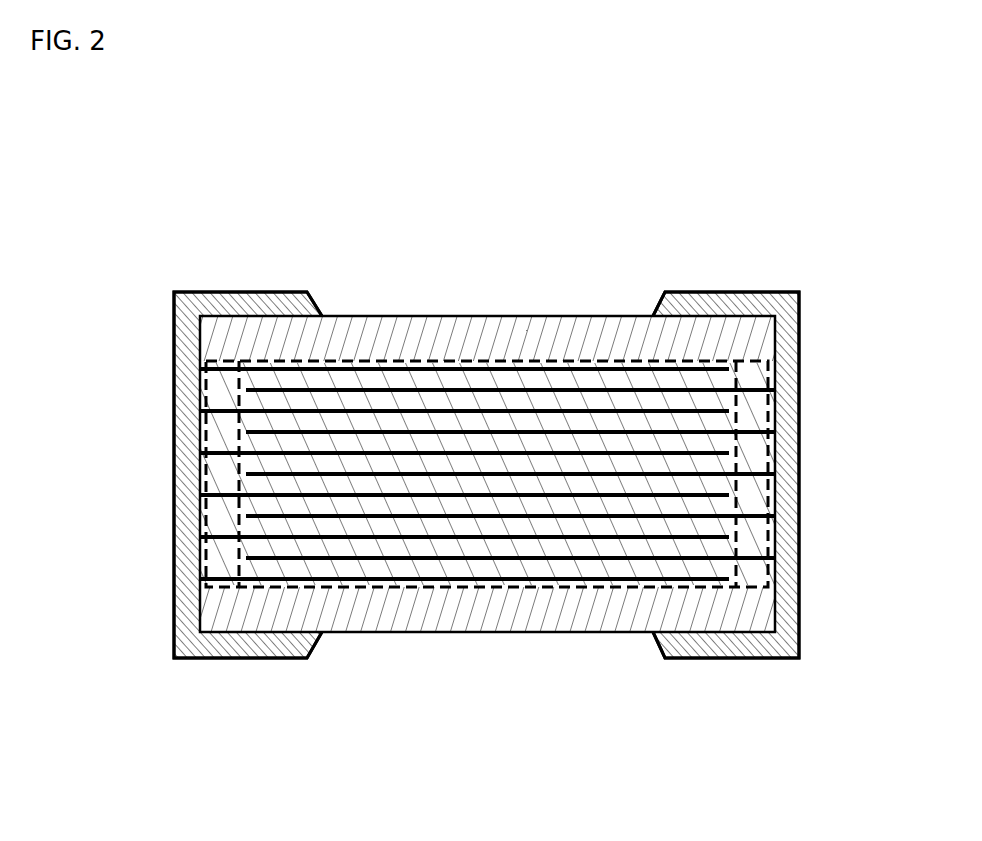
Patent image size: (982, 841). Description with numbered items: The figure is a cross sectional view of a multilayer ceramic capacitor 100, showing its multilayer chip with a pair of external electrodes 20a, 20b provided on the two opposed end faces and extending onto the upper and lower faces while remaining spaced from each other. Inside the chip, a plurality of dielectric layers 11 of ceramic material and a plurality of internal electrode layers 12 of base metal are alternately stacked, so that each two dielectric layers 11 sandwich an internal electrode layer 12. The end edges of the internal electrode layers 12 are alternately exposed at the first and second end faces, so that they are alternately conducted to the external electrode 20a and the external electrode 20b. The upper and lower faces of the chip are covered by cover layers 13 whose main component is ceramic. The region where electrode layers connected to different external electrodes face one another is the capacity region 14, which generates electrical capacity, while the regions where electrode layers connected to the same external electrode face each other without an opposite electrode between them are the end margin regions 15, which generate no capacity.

The multilayer ceramic capacitor 100 is at (702, 237).
The dielectric layer 11 is at (603, 545).
The internal electrode layer 12 is at (477, 524).
The cover layer 13 is at (386, 334).
The capacity region 14 is at (512, 361).
The end margin region 15 is at (222, 362).
The external electrode 20a is at (200, 292).
The external electrode 20b is at (765, 292).